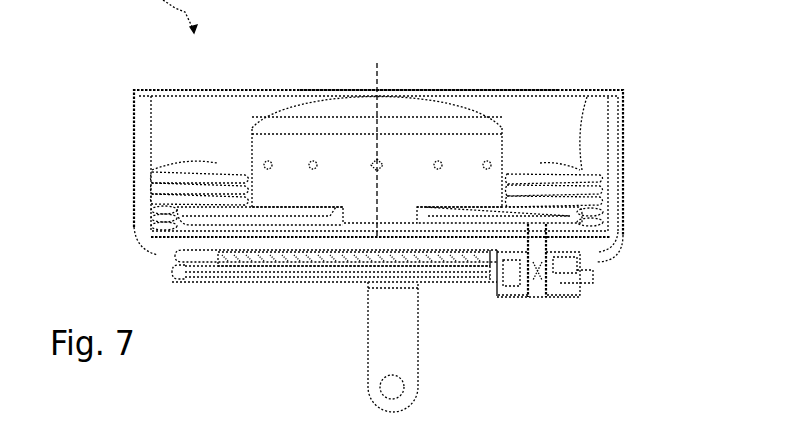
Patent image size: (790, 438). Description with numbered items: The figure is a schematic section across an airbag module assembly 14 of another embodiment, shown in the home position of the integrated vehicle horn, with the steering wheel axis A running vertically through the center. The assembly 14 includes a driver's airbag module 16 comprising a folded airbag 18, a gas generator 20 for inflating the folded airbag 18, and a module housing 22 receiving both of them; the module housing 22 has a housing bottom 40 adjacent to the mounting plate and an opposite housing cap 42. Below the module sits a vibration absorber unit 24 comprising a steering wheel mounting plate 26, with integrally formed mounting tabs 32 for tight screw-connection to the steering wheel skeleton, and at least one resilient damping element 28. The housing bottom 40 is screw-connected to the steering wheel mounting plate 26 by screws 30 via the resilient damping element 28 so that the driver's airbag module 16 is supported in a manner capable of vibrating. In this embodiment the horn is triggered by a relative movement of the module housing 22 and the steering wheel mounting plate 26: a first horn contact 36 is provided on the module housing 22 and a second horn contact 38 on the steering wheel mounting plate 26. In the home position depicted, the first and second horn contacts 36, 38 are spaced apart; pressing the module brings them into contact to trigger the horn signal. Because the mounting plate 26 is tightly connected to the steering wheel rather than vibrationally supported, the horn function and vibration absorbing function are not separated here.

The airbag module assembly 14 is at (140, 426).
The driver's airbag module 16 is at (672, 151).
The folded airbag 18 is at (588, 93).
The gas generator 20 is at (341, 105).
The module housing 22 is at (131, 133).
The vibration absorber unit 24 is at (603, 342).
The steering wheel mounting plate 26 is at (312, 279).
The resilient damping element 28 is at (572, 278).
The screw 30 is at (540, 300).
The mounting tab 32 is at (405, 356).
The first horn contact 36 is at (200, 259).
The second horn contact 38 is at (172, 272).
The housing bottom 40 is at (588, 248).
The housing cap 42 is at (480, 94).
The steering wheel axis A is at (377, 132).